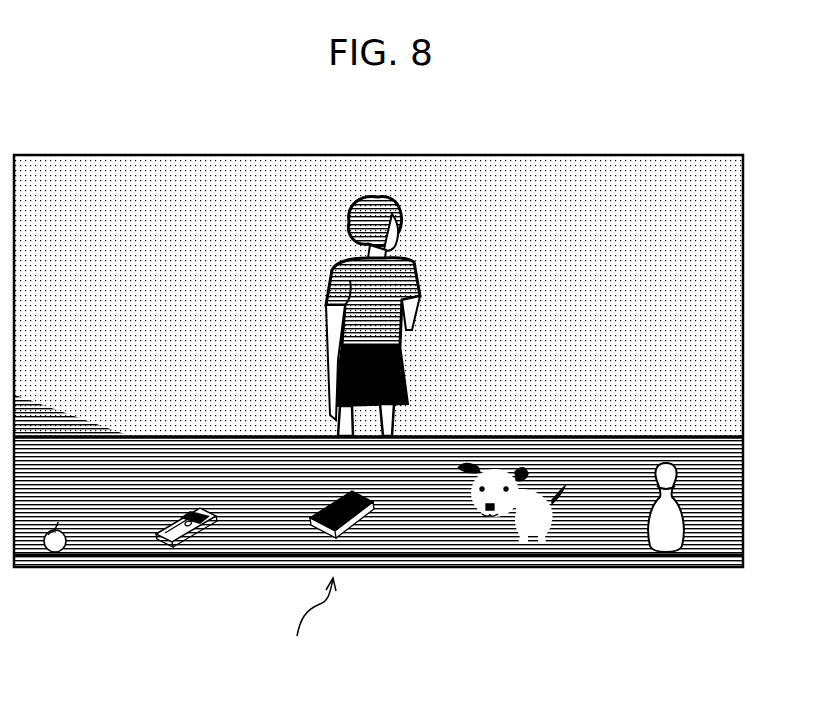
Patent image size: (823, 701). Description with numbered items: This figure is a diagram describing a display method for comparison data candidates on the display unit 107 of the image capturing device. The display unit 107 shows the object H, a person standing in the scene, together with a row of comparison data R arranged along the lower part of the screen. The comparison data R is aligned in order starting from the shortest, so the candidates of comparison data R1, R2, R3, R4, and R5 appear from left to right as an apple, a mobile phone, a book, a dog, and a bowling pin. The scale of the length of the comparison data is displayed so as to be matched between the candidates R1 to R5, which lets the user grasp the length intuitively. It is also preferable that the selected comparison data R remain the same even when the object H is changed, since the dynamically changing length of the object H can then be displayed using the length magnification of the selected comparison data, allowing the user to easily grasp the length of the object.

The display unit 107 is at (95, 155).
The object H is at (332, 270).
The comparison data candidate R1 is at (62, 530).
The comparison data candidate R2 is at (196, 509).
The comparison data candidate R3 is at (318, 510).
The comparison data candidate R4 is at (540, 494).
The comparison data candidate R5 is at (678, 492).
The comparison data R is at (296, 621).